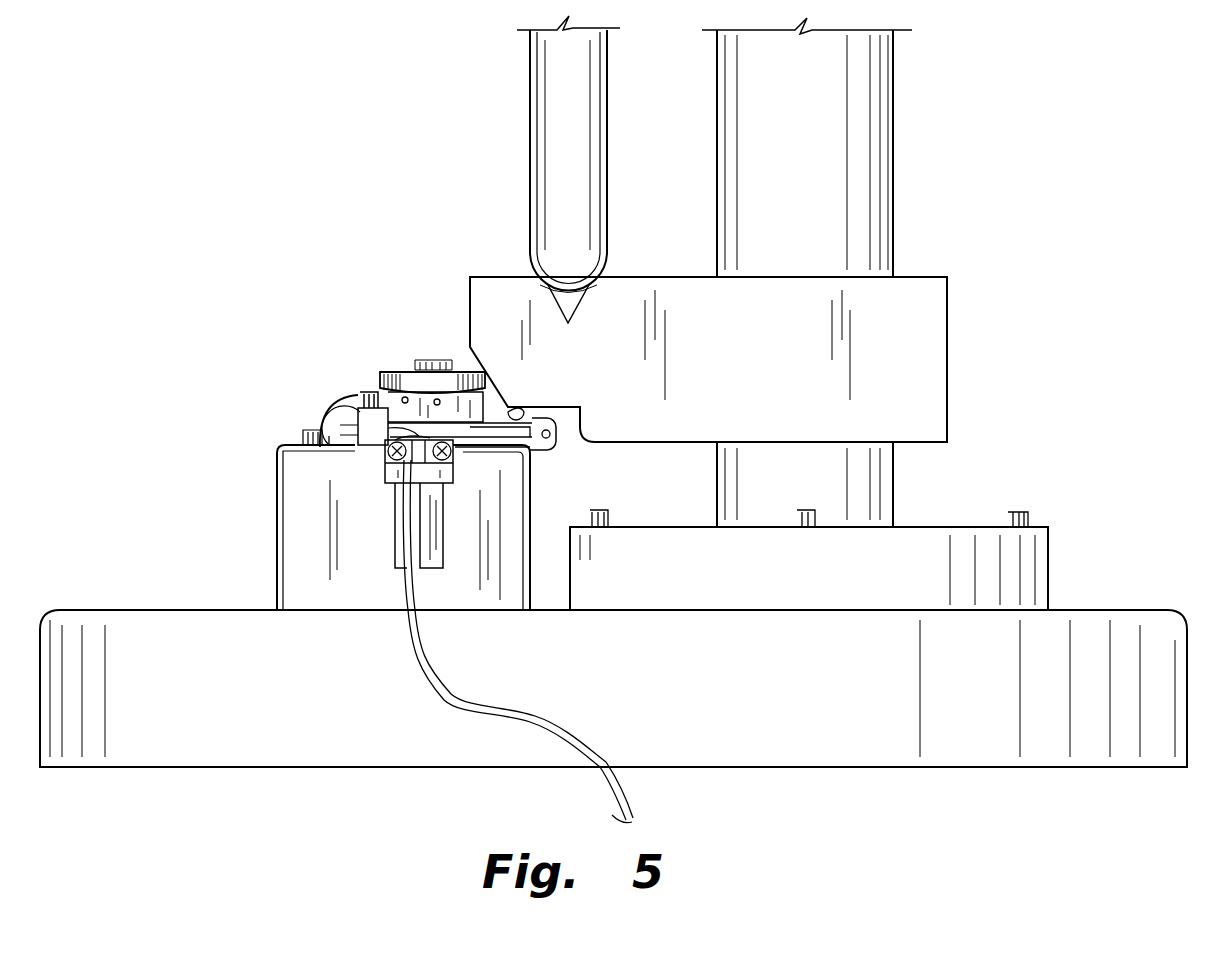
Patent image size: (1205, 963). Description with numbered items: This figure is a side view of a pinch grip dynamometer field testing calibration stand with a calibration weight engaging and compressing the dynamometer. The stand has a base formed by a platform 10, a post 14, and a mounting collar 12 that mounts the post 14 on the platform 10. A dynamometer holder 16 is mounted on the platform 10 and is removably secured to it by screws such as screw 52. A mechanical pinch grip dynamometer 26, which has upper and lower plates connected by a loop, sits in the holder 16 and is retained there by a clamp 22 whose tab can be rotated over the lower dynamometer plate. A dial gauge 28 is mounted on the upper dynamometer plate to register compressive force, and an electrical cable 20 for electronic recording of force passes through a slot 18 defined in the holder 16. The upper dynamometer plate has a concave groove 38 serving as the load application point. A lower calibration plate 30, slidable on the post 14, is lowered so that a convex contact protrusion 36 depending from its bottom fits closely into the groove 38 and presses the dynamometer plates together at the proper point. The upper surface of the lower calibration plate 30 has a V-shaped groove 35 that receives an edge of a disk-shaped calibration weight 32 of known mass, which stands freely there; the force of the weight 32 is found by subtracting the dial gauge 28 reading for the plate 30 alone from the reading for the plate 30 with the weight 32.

The platform 10 is at (1053, 635).
The mounting collar 12 is at (1036, 557).
The post 14 is at (893, 62).
The dynamometer holder 16 is at (292, 538).
The slot 18 is at (440, 535).
The electrical cable 20 is at (635, 800).
The clamp 22 is at (355, 403).
The mechanical pinch grip dynamometer 26 is at (335, 395).
The dial gauge 28 is at (410, 370).
The lower calibration plate 30 is at (920, 352).
The calibration weight 32 is at (548, 180).
The groove 35 is at (553, 305).
The convex contact protrusion 36 is at (520, 410).
The concave groove 38 is at (550, 452).
The screw 52 is at (300, 432).